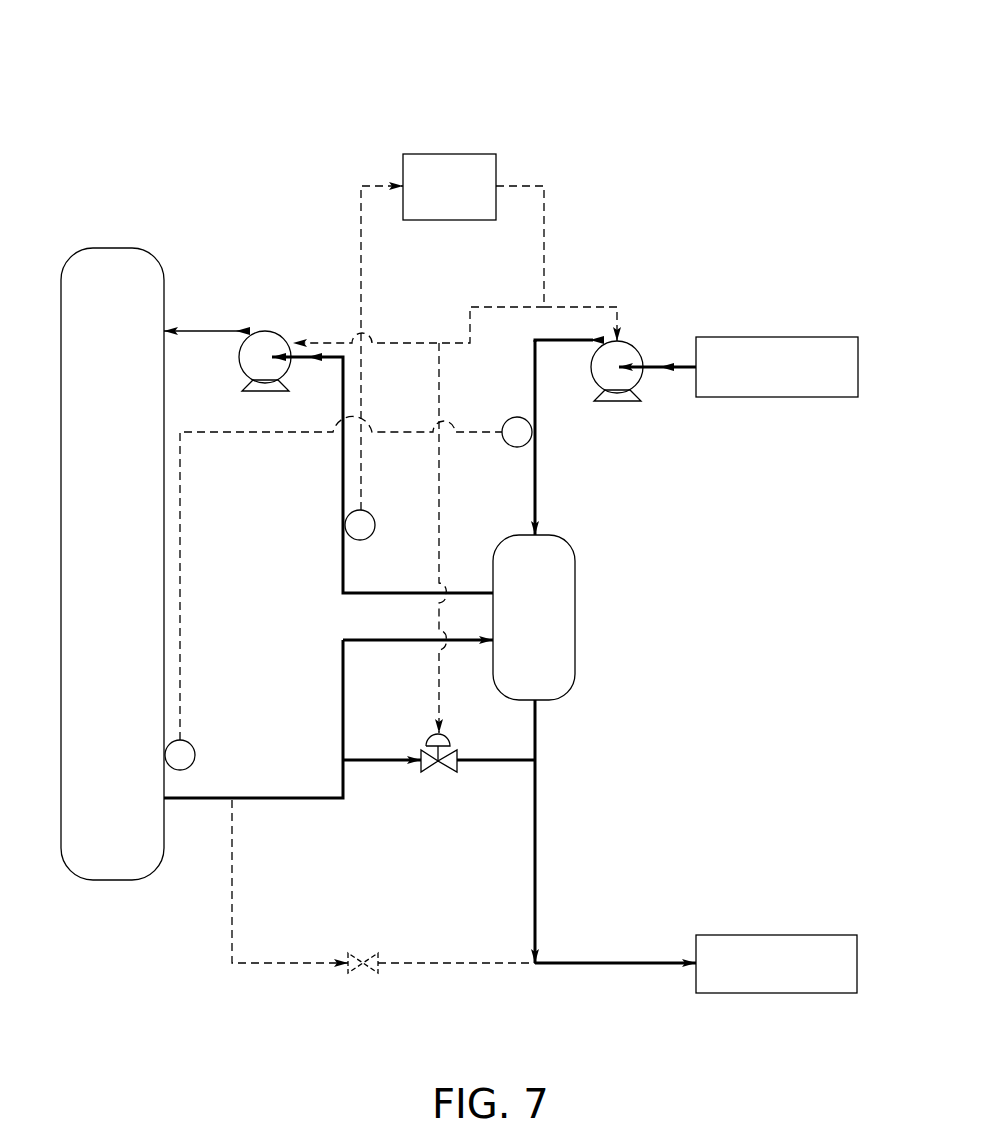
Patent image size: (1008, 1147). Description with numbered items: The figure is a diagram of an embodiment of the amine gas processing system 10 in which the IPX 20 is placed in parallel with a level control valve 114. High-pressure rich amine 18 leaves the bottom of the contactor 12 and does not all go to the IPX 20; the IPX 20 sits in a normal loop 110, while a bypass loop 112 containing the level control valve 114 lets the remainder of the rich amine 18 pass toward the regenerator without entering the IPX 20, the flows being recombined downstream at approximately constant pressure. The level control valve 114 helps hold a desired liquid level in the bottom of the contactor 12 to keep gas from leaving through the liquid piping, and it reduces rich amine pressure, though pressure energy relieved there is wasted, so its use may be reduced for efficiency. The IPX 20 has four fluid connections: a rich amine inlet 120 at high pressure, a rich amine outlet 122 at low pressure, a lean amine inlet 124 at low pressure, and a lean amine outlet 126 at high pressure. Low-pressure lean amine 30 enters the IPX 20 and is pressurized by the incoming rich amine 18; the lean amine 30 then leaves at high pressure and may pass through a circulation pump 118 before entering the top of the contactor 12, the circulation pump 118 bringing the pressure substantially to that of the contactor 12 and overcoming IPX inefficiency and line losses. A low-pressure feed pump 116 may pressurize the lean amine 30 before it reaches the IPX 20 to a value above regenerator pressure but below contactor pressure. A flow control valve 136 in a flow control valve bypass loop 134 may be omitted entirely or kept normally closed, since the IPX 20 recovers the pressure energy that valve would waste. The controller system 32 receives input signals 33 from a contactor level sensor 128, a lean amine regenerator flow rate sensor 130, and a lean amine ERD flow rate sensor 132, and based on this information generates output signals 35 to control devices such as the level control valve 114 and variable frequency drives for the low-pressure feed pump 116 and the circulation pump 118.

The amine gas processing system 10 is at (510, 82).
The contactor 12 is at (164, 430).
The rich amine 18 is at (777, 935).
The IPX 20 is at (575, 615).
The lean amine 30 is at (775, 337).
The controller system 32 is at (497, 164).
The input signals 33 is at (361, 245).
The output signals 35 is at (544, 245).
The normal loop 110 is at (327, 702).
The bypass loop 112 is at (368, 748).
The level control valve 114 is at (430, 745).
The low-pressure feed pump 116 is at (635, 345).
The circulation pump 118 is at (283, 333).
The rich amine inlet 120 is at (343, 638).
The rich amine outlet 122 is at (537, 815).
The lean amine inlet 124 is at (537, 485).
The lean amine outlet 126 is at (470, 595).
The contactor level sensor 128 is at (195, 752).
The lean amine regenerator flow rate sensor 130 is at (506, 420).
The lean amine ERD flow rate sensor 132 is at (373, 516).
The flow control valve bypass loop 134 is at (244, 884).
The flow control valve 136 is at (370, 950).